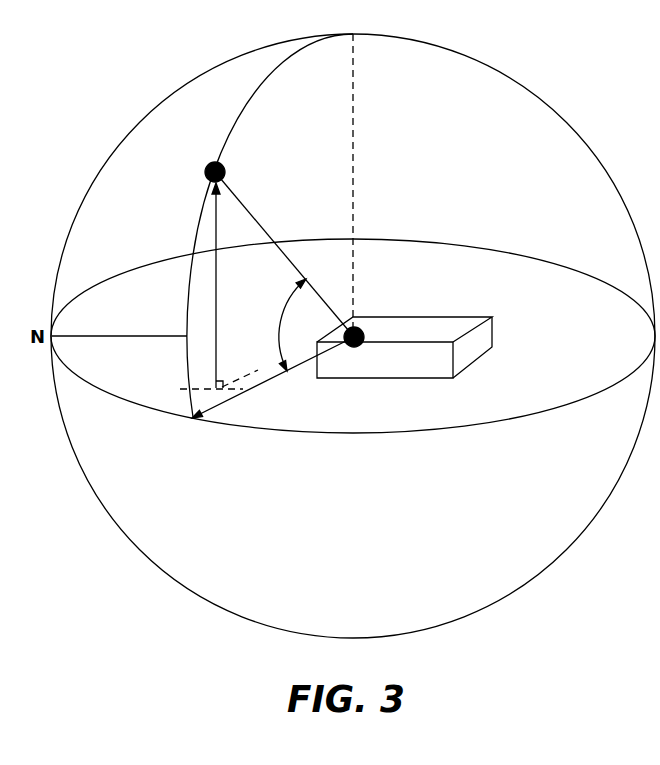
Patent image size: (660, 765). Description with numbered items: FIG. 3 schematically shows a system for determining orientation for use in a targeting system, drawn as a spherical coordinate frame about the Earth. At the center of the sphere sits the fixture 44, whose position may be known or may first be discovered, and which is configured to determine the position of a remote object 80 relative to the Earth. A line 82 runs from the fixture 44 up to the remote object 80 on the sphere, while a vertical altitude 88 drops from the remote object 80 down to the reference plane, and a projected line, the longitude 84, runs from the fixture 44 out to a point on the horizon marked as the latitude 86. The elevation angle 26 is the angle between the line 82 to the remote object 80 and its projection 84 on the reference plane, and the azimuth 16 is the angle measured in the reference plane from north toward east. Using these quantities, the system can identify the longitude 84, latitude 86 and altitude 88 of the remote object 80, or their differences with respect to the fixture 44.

The azimuth 16 is at (110, 395).
The elevation angle 26 is at (282, 326).
The fixture 44 is at (473, 315).
The remote object 80 is at (224, 164).
The sun vector 82 is at (268, 228).
The longitude 84 is at (230, 394).
The latitude 86 is at (204, 400).
The altitude 88 is at (217, 296).